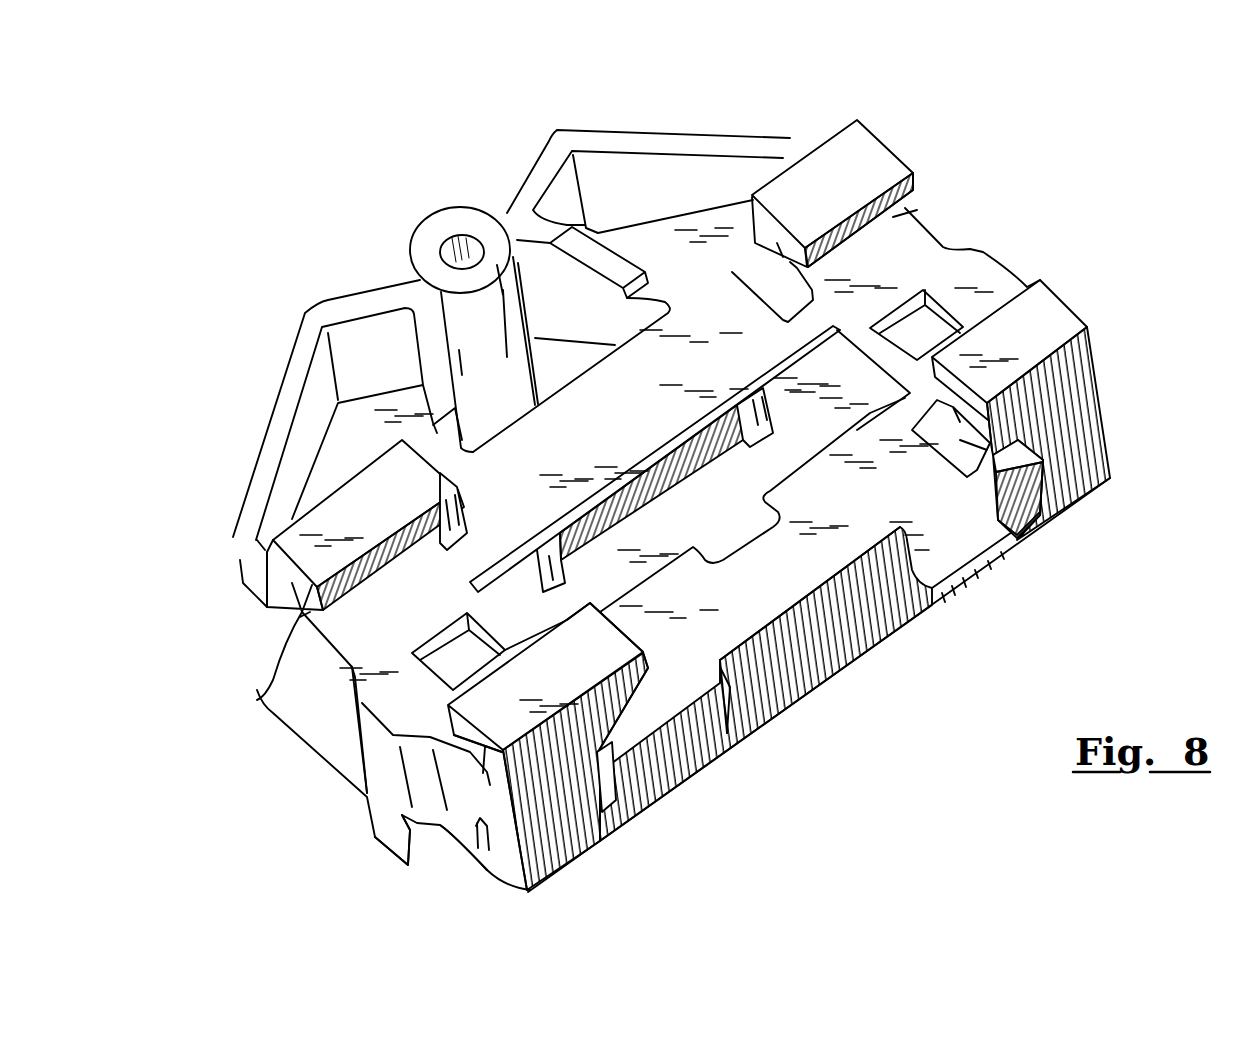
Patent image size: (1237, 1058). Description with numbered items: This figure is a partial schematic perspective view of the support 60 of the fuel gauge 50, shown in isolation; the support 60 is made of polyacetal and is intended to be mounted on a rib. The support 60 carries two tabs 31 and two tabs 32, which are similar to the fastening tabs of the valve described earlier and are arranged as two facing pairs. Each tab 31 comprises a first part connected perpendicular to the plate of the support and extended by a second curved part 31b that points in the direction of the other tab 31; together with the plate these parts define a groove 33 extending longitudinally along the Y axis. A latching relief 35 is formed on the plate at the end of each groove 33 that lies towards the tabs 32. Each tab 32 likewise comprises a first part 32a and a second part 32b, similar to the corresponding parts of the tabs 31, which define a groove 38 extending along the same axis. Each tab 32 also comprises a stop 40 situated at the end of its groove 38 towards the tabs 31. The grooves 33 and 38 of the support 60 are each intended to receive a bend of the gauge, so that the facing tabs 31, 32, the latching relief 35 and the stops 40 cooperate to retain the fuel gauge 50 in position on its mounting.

The fuel gauge 50 is at (1112, 156).
The tab 31 is at (820, 173).
The second curved part 31b is at (880, 158).
The groove 33 is at (892, 220).
The latching relief 35 is at (810, 280).
The tab 32 is at (377, 480).
The first part 32a is at (283, 590).
The second part 32b is at (327, 513).
The groove 38 is at (260, 688).
The stop 40 is at (453, 530).
The support 60 is at (767, 575).